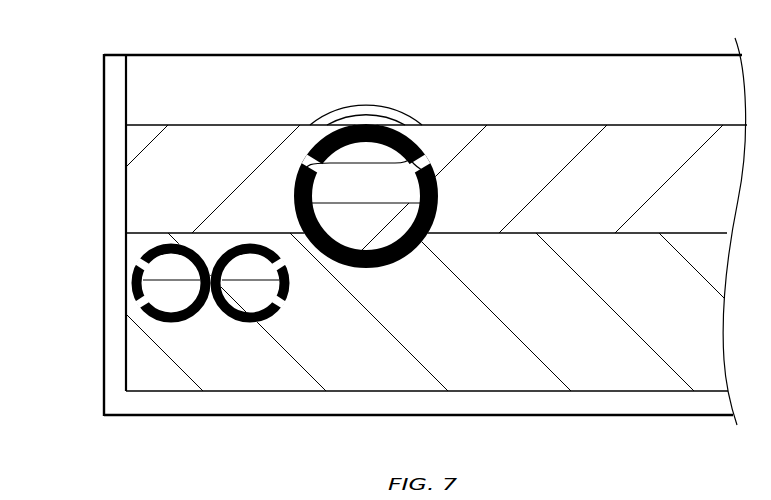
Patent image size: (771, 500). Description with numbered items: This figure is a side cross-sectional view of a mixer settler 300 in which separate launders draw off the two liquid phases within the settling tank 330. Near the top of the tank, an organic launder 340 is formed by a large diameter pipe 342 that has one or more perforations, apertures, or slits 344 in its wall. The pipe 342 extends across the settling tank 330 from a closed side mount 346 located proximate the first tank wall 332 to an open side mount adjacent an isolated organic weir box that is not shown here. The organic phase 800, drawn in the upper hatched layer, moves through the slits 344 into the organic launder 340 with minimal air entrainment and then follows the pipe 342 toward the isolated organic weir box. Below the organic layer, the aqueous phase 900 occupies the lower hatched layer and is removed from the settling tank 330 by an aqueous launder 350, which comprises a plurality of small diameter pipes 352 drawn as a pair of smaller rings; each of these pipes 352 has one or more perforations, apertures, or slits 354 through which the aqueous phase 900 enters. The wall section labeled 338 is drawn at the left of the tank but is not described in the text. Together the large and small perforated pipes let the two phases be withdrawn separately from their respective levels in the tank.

The mixer settler 300 is at (84, 46).
The settling tank 330 is at (589, 76).
The first tank wall 332 is at (467, 55).
The side wall 338 is at (110, 128).
The organic launder 340 is at (284, 176).
The large diameter pipe 342 is at (437, 197).
The perforations, apertures, or slits 344 is at (408, 161).
The closed side mount 346 is at (383, 110).
The aqueous launder 350 is at (215, 333).
The small diameter pipes 352 is at (265, 320).
The perforations, apertures, or slits 354 is at (283, 308).
The organic phase 800 is at (615, 198).
The aqueous phase 900 is at (670, 309).